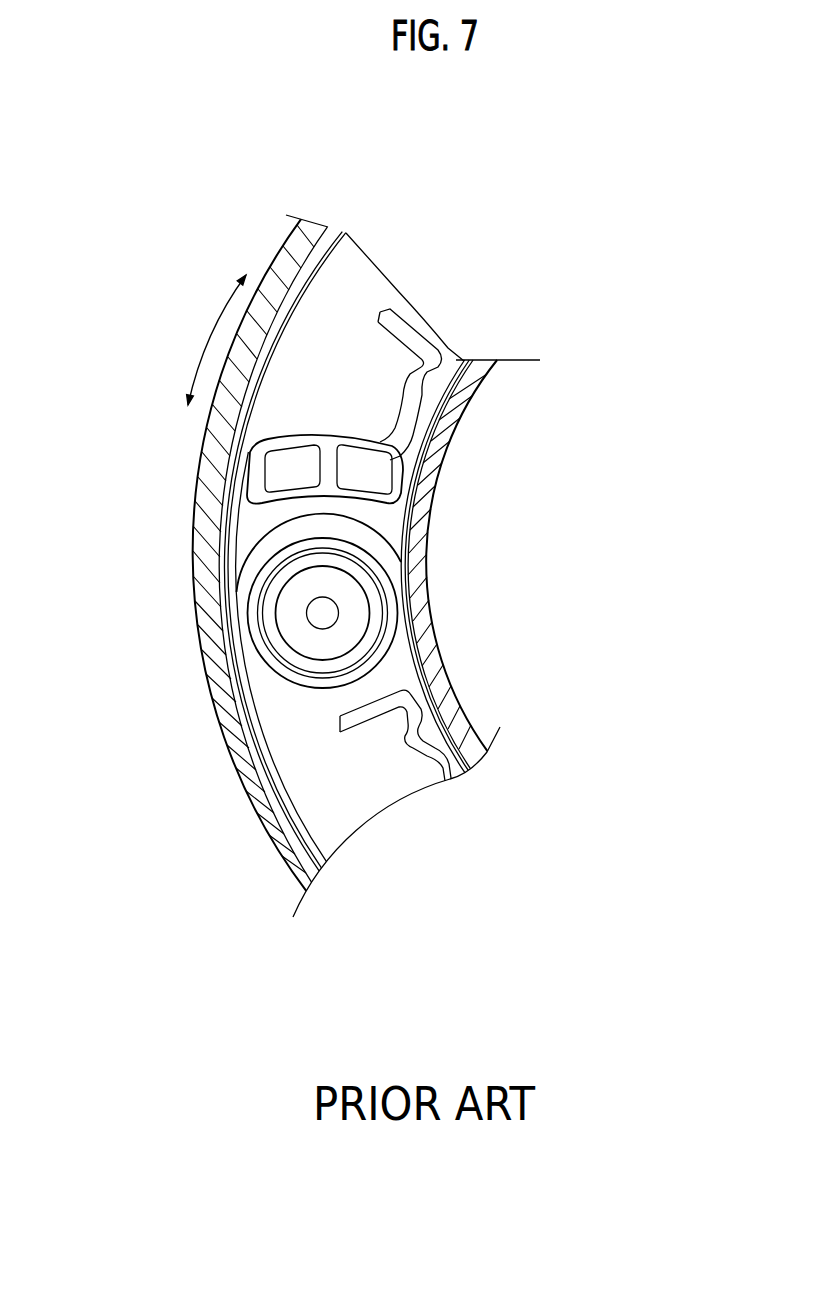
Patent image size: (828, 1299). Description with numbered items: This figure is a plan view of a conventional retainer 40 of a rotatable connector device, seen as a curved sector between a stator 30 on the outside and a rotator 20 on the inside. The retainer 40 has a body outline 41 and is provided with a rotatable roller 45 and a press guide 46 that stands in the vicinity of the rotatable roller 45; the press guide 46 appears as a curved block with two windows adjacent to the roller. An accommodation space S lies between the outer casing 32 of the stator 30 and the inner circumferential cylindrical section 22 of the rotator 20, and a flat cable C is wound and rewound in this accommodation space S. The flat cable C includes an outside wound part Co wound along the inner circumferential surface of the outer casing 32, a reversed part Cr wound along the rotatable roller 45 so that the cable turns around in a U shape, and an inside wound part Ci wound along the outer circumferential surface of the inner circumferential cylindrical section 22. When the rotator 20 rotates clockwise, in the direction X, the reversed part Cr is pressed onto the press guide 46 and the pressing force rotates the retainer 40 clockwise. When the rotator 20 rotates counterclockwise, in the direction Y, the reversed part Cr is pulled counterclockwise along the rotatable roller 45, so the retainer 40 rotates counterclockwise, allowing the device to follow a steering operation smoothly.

The rotator 20 is at (440, 658).
The inner circumferential cylindrical section 22 is at (448, 680).
The stator 30 is at (228, 746).
The outer casing 32 is at (248, 793).
The retainer 40 is at (309, 538).
The component body outline 41 is at (352, 287).
The rotatable roller 45 is at (397, 607).
The press guide 46 is at (247, 482).
The flat cable C is at (238, 677).
The reversed part Cr is at (262, 536).
The outside wound part Co is at (283, 813).
The inside wound part Ci is at (437, 642).
The accommodation space S is at (329, 791).
The clockwise direction X is at (217, 328).
The counterclockwise direction Y is at (178, 402).